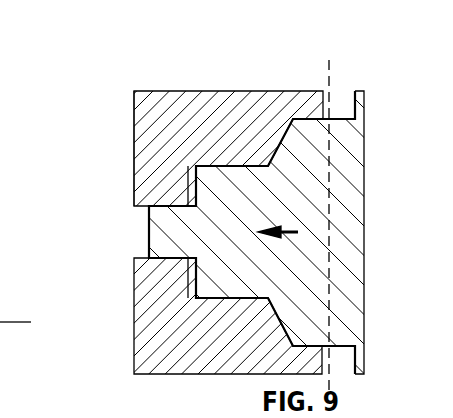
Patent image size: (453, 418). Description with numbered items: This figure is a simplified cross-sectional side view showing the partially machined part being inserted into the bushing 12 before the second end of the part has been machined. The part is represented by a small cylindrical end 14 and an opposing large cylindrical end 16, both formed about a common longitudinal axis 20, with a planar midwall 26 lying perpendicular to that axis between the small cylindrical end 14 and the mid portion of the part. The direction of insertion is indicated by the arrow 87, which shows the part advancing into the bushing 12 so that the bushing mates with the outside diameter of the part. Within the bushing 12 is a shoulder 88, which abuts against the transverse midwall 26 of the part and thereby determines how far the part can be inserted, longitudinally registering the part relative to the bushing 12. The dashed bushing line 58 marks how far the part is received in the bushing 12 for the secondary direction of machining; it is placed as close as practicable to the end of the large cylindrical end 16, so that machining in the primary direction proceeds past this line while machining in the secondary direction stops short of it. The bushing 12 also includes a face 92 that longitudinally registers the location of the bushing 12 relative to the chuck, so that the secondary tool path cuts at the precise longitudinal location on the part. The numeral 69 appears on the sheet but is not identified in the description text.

The bushing 12 is at (178, 112).
The small cylindrical end 14 is at (178, 243).
The large cylindrical end 16 is at (353, 186).
The longitudinal axis 20 is at (16, 322).
The midwall 26 is at (196, 282).
The bushing line 58 is at (331, 67).
The surface 69 is at (47, 417).
The arrow 87 is at (296, 238).
The shoulder 88 is at (190, 186).
The face 92 is at (134, 157).